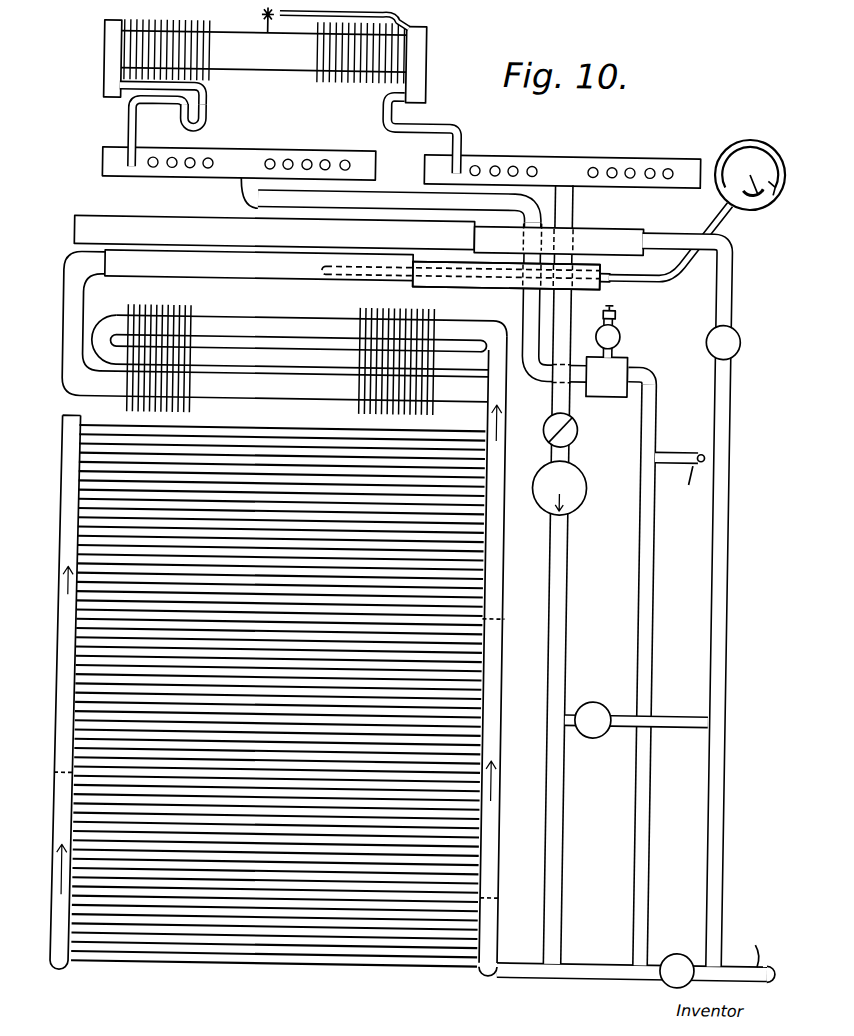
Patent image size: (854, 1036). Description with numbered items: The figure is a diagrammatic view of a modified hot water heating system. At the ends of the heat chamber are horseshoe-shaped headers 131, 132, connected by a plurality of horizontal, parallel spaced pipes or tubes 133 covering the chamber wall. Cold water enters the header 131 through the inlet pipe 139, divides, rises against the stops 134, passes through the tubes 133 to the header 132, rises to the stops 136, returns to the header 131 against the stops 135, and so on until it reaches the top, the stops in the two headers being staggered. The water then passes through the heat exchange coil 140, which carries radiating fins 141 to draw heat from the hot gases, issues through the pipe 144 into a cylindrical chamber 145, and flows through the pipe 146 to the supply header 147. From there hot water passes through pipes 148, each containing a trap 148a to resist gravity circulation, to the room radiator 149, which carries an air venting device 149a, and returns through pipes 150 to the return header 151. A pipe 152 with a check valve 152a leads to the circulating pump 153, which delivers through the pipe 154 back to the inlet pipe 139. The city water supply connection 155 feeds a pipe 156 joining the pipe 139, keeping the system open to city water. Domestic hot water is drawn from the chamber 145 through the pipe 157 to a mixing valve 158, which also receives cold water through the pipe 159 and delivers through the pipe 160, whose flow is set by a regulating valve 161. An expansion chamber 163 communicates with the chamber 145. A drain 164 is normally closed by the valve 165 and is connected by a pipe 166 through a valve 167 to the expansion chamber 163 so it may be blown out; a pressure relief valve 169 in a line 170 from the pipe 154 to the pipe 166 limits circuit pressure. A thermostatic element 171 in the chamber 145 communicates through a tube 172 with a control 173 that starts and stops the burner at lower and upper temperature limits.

The header 131 is at (500, 728).
The header 132 is at (61, 692).
The pipes or tubes 133 is at (161, 938).
The stops 134 is at (500, 893).
The stops 135 is at (506, 620).
The stops 136 is at (58, 782).
The inlet pipe 139 is at (515, 960).
The heat exchange coil 140 is at (326, 316).
The radiating fins 141 is at (190, 318).
The pipe 144 is at (60, 328).
The cylindrical chamber 145 is at (357, 285).
The pipe 146 is at (387, 198).
The supply header 147 is at (213, 172).
The pipes 148 is at (121, 129).
The traps 148a is at (198, 118).
The room radiator 149 is at (97, 55).
The radiator air venting device 149a is at (329, 36).
The pipes 150 is at (432, 126).
The return header 151 is at (634, 160).
The pipe 152 is at (549, 404).
The check valve 152a is at (576, 433).
The circulating pump 153 is at (586, 491).
The pipe 154 is at (566, 615).
The city water supply connection 155 is at (682, 450).
The pipe 156 is at (650, 615).
The pipe 157 is at (519, 316).
The mixing valve 158 is at (624, 355).
The pipe 159 is at (656, 396).
The pipe 160 is at (613, 301).
The regulating valve 161 is at (594, 338).
The expansion chamber 163 is at (143, 221).
The drain 164 is at (735, 960).
The valve 165 is at (682, 951).
The pipe 166 is at (724, 650).
The valve 167 is at (738, 339).
The pressure relief valve 169 is at (598, 700).
The line 170 is at (675, 714).
The fluid thermometer or thermostatic element 171 is at (423, 272).
The tube 172 is at (669, 241).
The control 173 is at (716, 143).